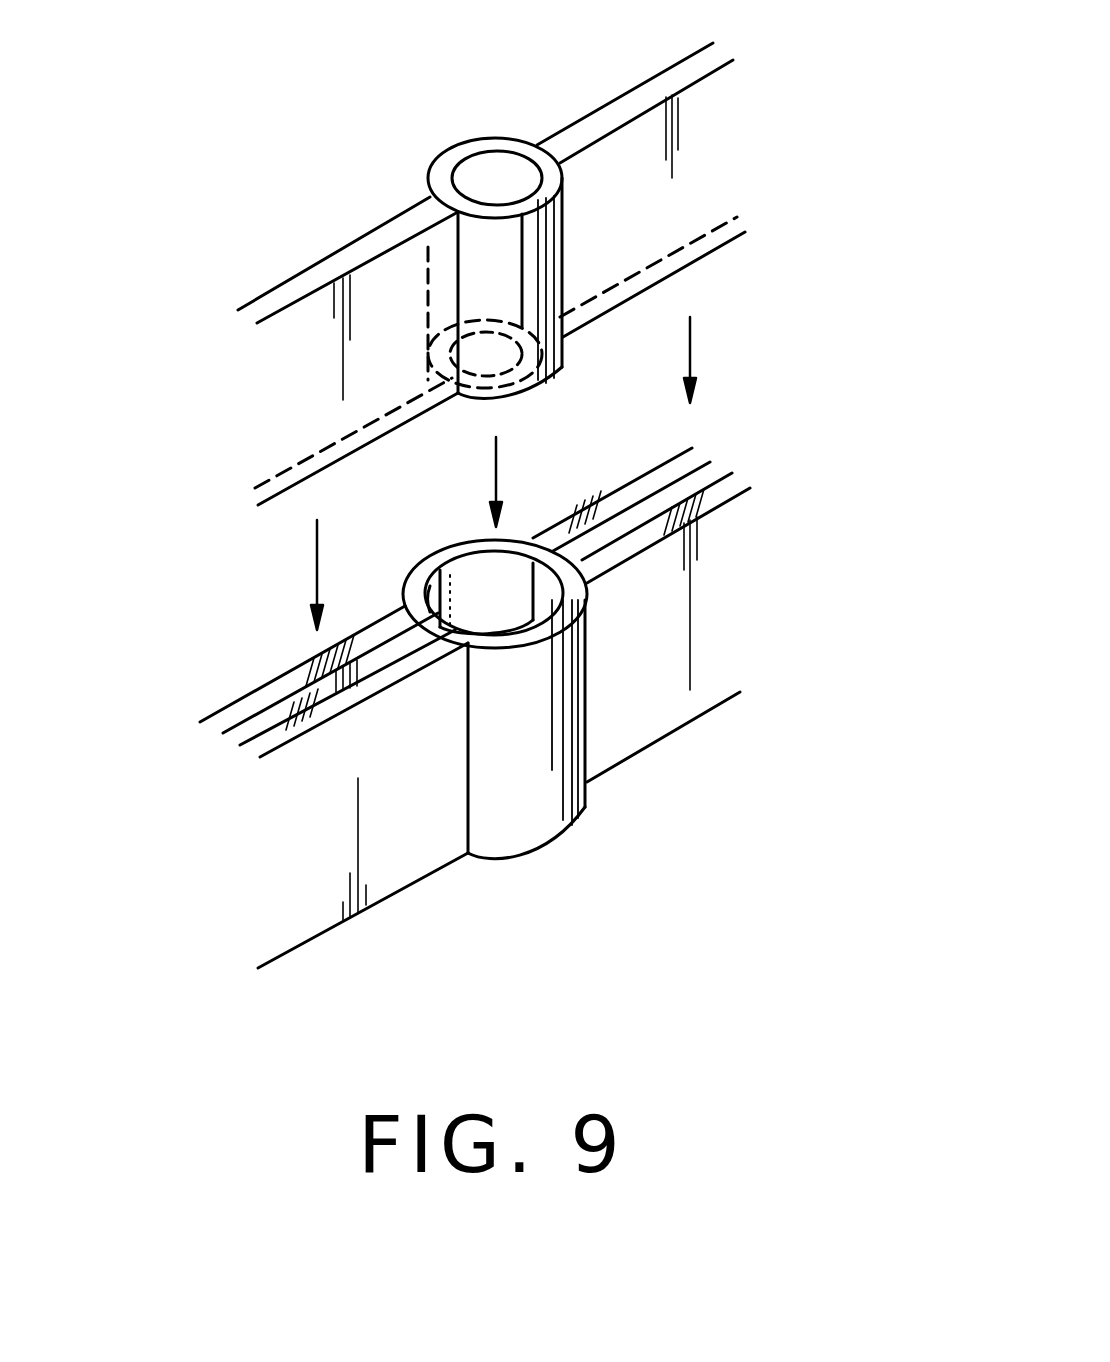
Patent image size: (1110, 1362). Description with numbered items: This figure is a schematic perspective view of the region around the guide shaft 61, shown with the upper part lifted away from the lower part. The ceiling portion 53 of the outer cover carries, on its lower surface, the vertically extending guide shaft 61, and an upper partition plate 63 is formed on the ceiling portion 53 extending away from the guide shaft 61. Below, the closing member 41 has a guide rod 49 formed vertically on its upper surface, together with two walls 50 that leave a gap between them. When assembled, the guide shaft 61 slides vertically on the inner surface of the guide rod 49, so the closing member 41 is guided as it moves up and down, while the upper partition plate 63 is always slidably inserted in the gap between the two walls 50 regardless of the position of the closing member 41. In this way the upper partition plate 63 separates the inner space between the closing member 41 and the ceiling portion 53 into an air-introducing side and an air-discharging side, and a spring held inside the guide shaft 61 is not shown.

The closing member 41 is at (773, 739).
The guide rod 49 is at (542, 788).
The walls 50 is at (262, 697).
The ceiling portion 53 is at (598, 115).
The guide shaft 61 is at (540, 253).
The upper partition plate 63 is at (317, 413).